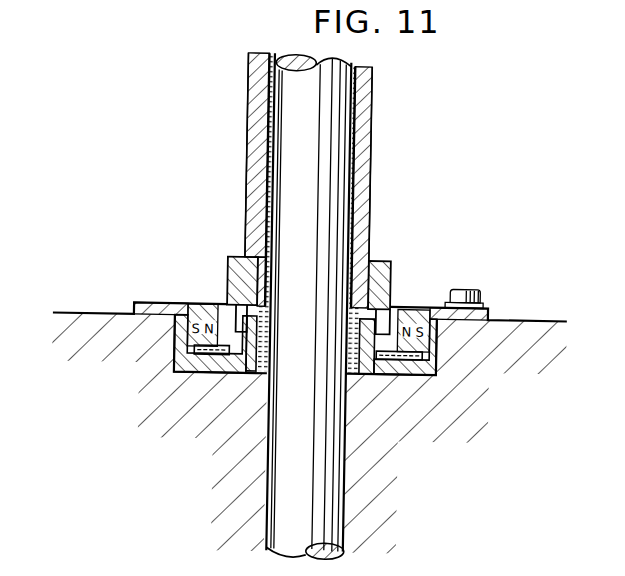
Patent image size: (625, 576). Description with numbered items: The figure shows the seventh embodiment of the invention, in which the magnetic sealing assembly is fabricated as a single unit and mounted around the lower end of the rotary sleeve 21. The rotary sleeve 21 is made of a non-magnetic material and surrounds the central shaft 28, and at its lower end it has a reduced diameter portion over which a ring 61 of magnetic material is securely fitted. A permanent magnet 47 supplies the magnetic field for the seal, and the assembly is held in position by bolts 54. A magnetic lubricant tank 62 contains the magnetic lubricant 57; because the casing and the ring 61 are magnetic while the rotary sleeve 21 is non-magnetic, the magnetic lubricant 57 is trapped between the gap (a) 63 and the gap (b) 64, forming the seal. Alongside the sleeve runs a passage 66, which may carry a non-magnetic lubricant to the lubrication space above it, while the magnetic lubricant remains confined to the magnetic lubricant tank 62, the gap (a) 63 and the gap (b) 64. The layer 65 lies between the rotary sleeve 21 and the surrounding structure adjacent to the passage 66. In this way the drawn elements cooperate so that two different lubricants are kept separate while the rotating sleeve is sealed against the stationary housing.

The rotary sleeve 21 is at (367, 112).
The shaft 28 is at (330, 482).
The permanent magnet 47 is at (436, 341).
The bolts 54 is at (466, 288).
The magnetic lubricant 57 is at (378, 357).
The ring 61 is at (383, 277).
The magnetic lubricant tank 62 is at (393, 337).
The gap (a) 63 is at (227, 347).
The gap (b) 64 is at (238, 350).
The inner sleeve 65 is at (356, 203).
The passage 66 is at (266, 176).